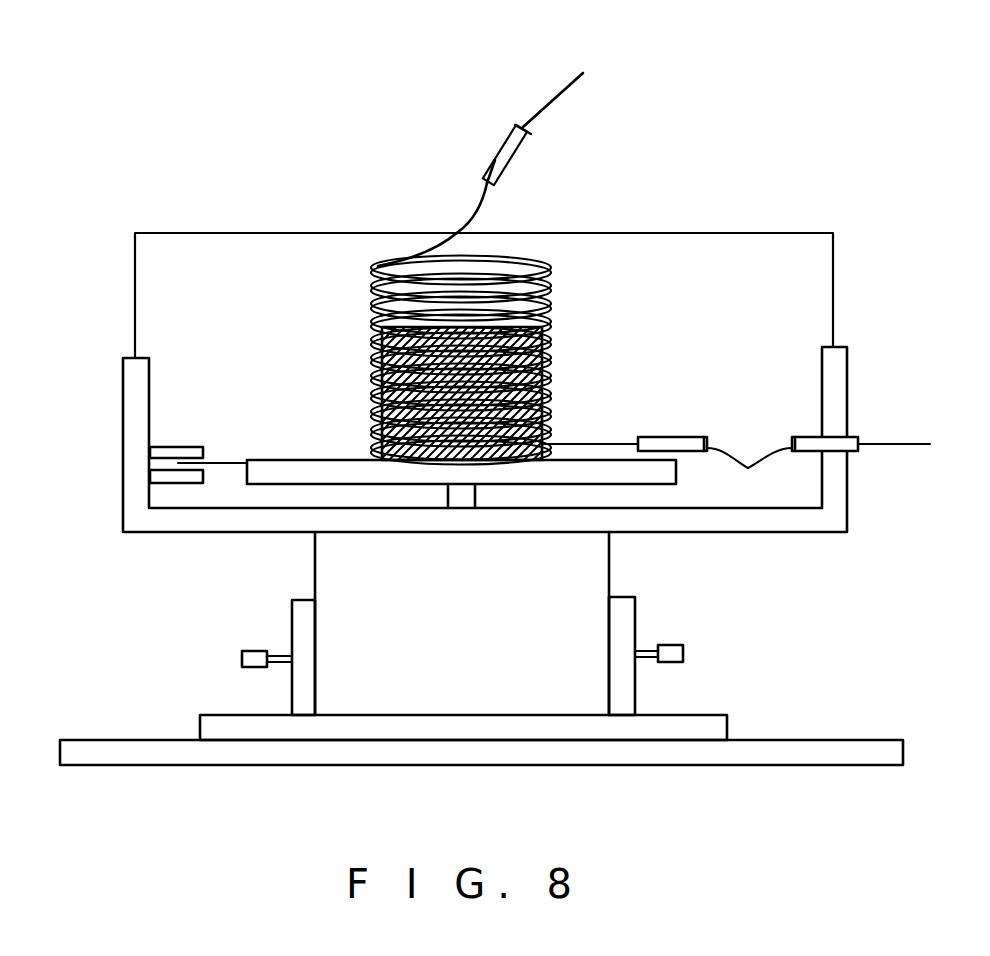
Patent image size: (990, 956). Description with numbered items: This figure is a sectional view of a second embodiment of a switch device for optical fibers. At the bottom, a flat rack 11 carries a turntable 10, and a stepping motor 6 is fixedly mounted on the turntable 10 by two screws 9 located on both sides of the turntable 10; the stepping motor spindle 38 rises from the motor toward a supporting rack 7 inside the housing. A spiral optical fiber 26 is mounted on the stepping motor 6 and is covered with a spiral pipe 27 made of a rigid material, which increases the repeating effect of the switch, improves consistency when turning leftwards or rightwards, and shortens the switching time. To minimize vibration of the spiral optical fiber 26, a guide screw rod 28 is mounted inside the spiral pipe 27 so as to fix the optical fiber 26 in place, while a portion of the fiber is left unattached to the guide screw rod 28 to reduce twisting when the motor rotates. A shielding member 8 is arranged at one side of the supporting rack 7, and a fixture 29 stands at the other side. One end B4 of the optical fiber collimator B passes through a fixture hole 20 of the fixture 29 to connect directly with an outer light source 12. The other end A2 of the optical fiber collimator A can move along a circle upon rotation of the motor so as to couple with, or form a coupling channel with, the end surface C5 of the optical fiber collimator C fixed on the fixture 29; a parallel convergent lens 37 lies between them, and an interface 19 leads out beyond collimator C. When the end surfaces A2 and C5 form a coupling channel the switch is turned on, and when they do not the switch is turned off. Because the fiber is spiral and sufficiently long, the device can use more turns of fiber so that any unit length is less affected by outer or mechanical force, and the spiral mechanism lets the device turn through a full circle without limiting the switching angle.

The stepping motor 6 is at (609, 570).
The supporting rack 7 is at (298, 460).
The shielding member 8 is at (188, 447).
The screws 9 is at (243, 652).
The turntable 10 is at (722, 725).
The flat rack 11 is at (178, 765).
The light source 12 is at (563, 90).
The interface 19 is at (915, 442).
The fixture hole 20 is at (458, 232).
The optical fiber 26 is at (483, 202).
The spiral pipe 27 is at (555, 290).
The guide screw rod 28 is at (553, 360).
The fixture 29 is at (835, 362).
The parallel convergent lens 37 is at (749, 476).
The stepping motor spindle 38 is at (462, 532).
The optical fiber collimator A is at (650, 439).
The end surface A2 is at (708, 439).
The optical fiber collimator B is at (508, 155).
The end surface B4 is at (527, 132).
The optical fiber collimator C is at (850, 438).
The end surface C5 is at (792, 440).